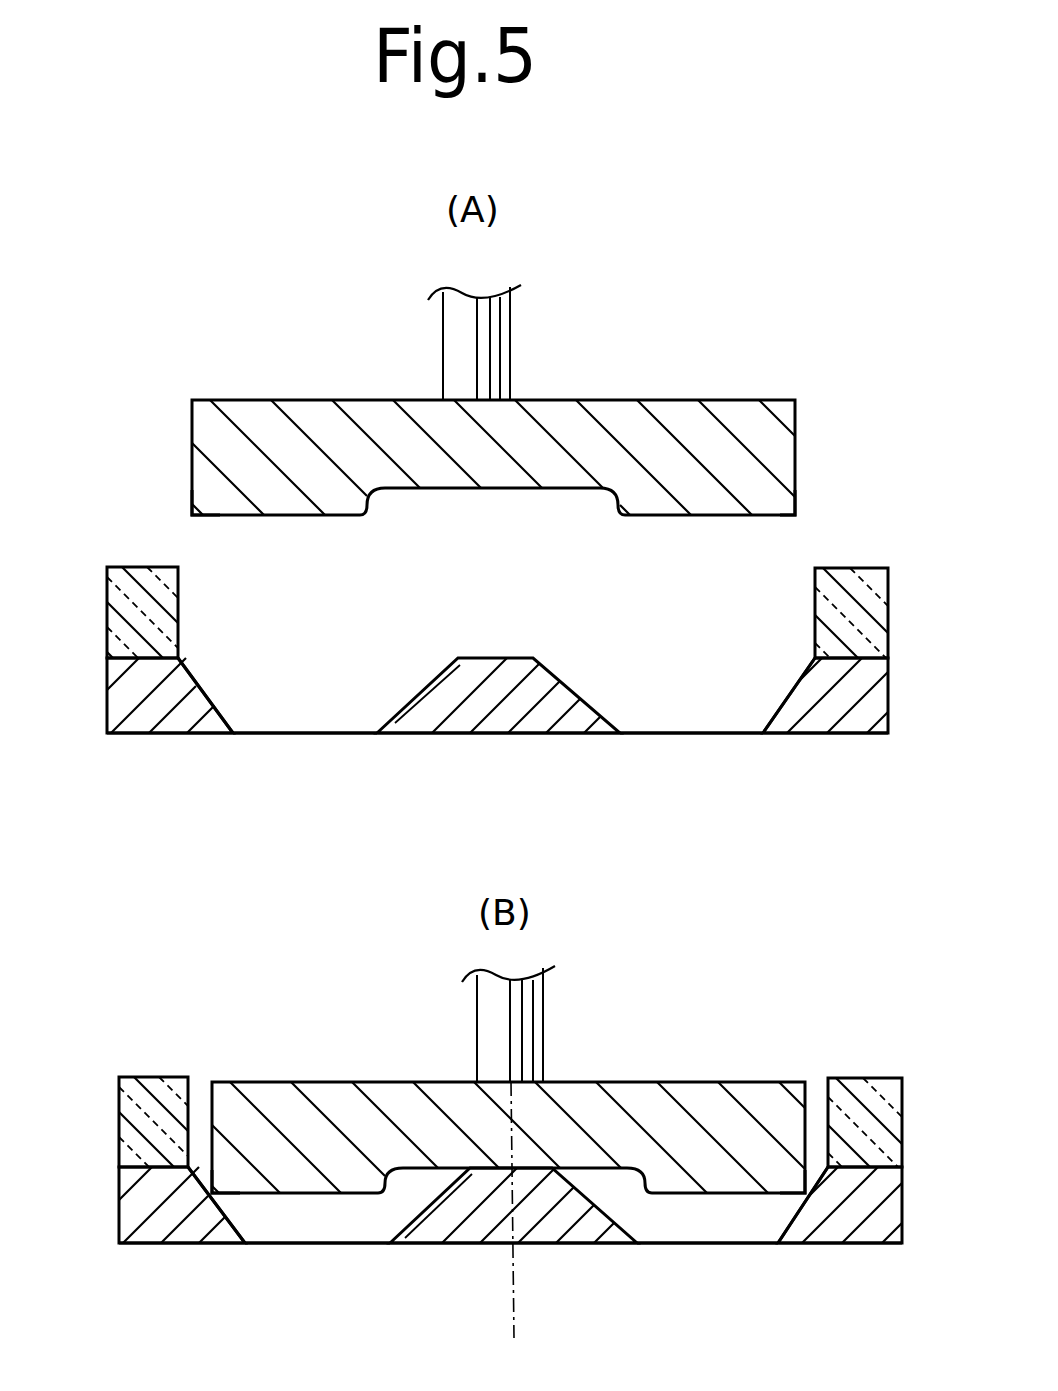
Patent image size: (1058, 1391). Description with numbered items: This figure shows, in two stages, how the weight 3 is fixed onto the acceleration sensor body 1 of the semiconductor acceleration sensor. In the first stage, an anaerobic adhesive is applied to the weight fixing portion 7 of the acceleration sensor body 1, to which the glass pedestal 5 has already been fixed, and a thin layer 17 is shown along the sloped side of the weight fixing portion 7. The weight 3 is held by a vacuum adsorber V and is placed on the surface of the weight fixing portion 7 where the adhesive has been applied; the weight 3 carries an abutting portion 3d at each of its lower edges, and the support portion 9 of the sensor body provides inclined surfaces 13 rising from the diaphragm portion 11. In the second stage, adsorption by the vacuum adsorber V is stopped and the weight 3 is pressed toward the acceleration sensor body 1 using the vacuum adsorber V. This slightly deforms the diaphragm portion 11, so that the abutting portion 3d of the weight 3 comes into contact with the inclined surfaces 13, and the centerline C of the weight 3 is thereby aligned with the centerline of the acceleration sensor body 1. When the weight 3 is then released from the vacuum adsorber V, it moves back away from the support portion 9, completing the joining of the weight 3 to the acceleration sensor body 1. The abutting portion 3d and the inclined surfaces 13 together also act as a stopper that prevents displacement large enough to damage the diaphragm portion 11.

In FIG. 5A, the acceleration sensor body 1 is at (153, 712).
In FIG. 5B, the acceleration sensor body 1 is at (162, 1217).
In FIG. 5A, the weight 3 is at (637, 420).
In FIG. 5B, the weight 3 is at (655, 1098).
In FIG. 5A, the abutting portion 3d is at (192, 515).
In FIG. 5B, the abutting portion 3d is at (193, 1198).
In FIG. 5A, the glass pedestal 5 is at (127, 596).
In FIG. 5B, the glass pedestal 5 is at (135, 1098).
In FIG. 5A, the weight fixing portion 7 is at (463, 717).
In FIG. 5B, the weight fixing portion 7 is at (472, 1223).
In FIG. 5A, the support portion 9 is at (138, 683).
In FIG. 5B, the support portion 9 is at (143, 1188).
In FIG. 5A, the diaphragm portion 11 is at (300, 737).
In FIG. 5B, the diaphragm portion 11 is at (308, 1246).
In FIG. 5A, the inclined surfaces 13 is at (203, 692).
In FIG. 5B, the inclined surfaces 13 is at (208, 1193).
In FIG. 5A, the thin layer 17 is at (503, 657).
In FIG. 5A, the vacuum adsorber V is at (493, 350).
In FIG. 5B, the vacuum adsorber V is at (513, 1003).
In FIG. 5B, the centerline C is at (517, 1303).